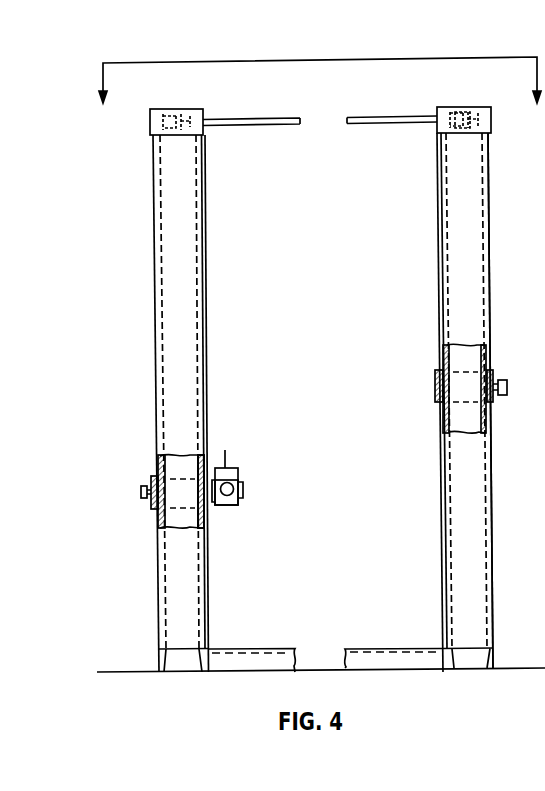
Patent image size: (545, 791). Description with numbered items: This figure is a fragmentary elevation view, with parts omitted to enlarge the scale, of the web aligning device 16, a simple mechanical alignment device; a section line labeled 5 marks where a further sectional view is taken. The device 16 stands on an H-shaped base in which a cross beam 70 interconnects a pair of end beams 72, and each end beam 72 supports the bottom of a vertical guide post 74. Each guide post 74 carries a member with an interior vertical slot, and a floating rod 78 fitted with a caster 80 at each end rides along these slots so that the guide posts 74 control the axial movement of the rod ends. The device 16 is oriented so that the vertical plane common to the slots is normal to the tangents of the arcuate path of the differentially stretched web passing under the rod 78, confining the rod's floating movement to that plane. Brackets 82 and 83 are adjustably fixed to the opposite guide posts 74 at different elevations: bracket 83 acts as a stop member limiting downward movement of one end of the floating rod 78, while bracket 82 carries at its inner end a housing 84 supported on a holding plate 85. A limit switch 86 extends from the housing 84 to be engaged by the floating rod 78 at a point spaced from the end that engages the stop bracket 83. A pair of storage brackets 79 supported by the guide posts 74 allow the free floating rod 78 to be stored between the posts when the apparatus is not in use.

The section line for FIG. 5 is at (319, 93).
The web aligning device 16 is at (473, 590).
The cross beam 70 is at (243, 649).
The end beam 72 is at (470, 660).
The vertical guide post 74 is at (207, 171).
The floating rod 78 is at (345, 117).
The storage bracket 79 is at (173, 137).
The caster 80 is at (460, 108).
The bracket 82 is at (157, 480).
The bracket 83 is at (435, 389).
The housing 84 is at (224, 505).
The holding plate 85 is at (209, 478).
The limit switch 86 is at (225, 462).